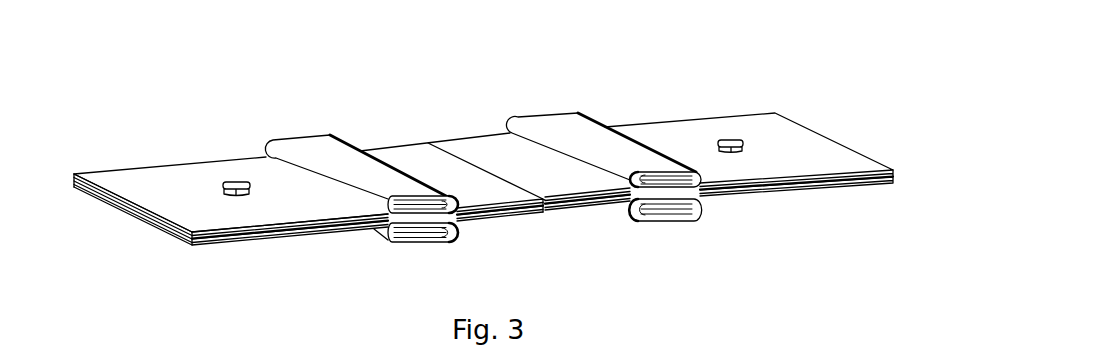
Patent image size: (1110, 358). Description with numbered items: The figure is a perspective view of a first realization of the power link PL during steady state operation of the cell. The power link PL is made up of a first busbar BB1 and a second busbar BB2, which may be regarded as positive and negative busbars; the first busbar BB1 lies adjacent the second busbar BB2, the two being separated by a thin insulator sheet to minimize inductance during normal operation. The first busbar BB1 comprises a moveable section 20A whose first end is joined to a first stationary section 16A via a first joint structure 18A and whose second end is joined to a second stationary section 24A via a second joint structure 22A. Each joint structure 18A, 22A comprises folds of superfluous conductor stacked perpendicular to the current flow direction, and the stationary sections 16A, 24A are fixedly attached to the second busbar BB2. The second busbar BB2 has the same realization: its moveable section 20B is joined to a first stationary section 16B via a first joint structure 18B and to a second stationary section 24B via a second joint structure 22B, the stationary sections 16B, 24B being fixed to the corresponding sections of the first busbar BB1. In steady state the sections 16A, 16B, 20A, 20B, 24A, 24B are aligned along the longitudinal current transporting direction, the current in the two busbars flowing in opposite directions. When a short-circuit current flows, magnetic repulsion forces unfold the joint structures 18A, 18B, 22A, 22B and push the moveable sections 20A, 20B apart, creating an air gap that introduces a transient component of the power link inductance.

The first stationary section 16A is at (187, 195).
The first stationary section 16B is at (270, 233).
The first joint structure 18A is at (326, 143).
The first joint structure 18B is at (427, 241).
The moveable section 20A is at (532, 170).
The moveable section 20B is at (553, 212).
The second joint structure 22A is at (567, 125).
The second joint structure 22B is at (672, 213).
The second stationary section 24A is at (797, 162).
The second stationary section 24B is at (807, 188).
The first busbar BB1 is at (127, 177).
The second busbar BB2 is at (285, 252).
The power link PL is at (728, 69).